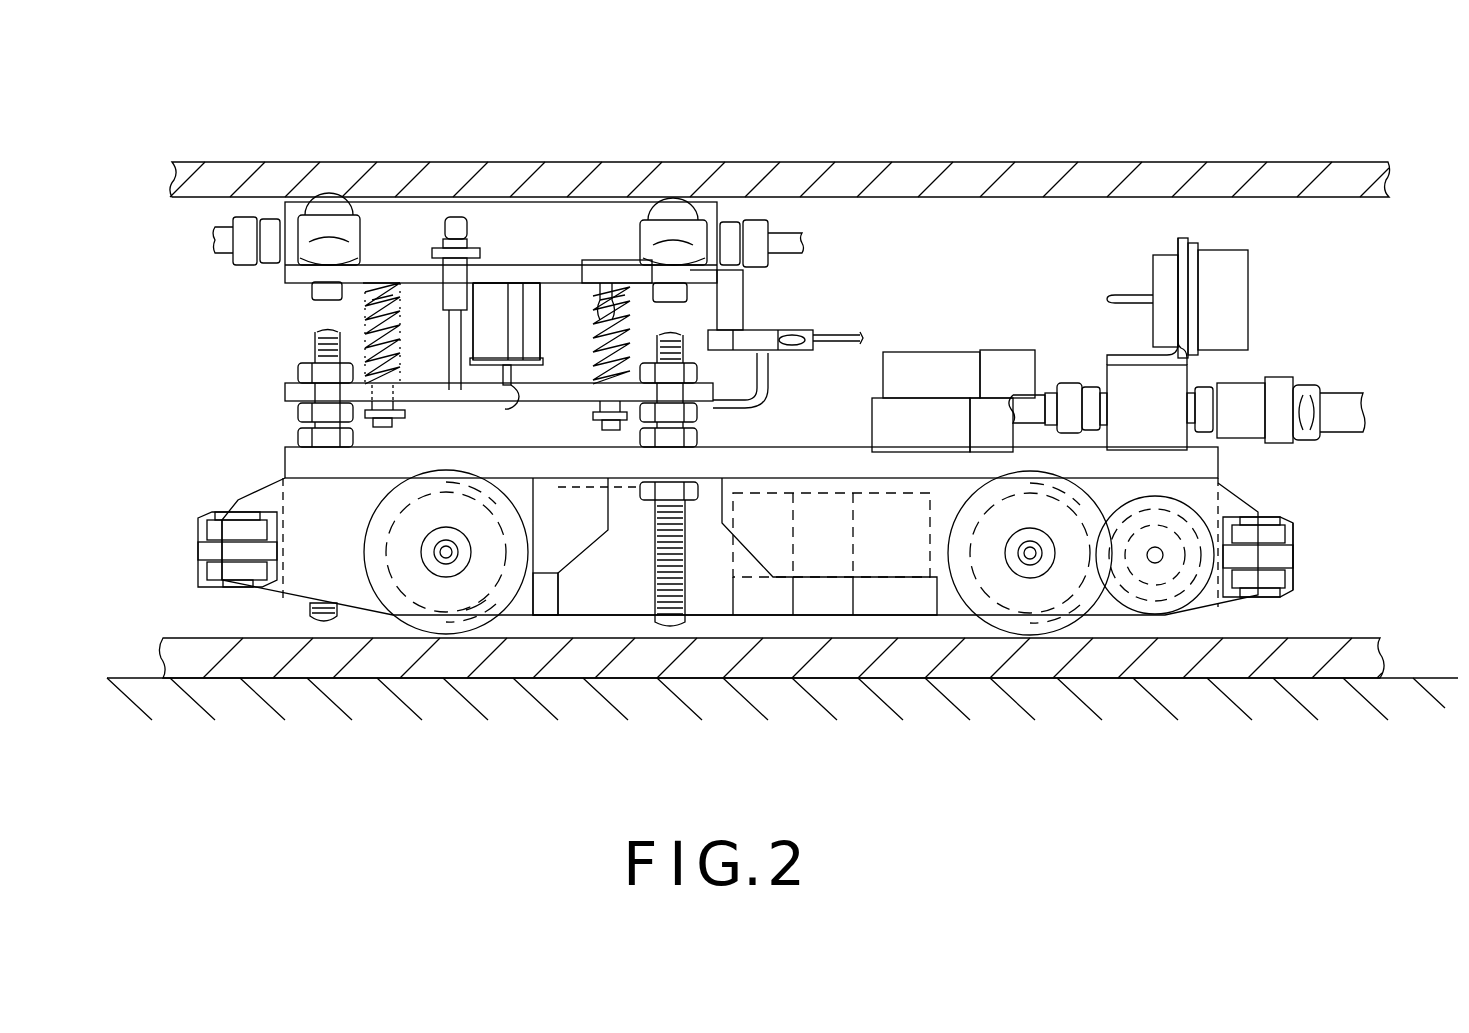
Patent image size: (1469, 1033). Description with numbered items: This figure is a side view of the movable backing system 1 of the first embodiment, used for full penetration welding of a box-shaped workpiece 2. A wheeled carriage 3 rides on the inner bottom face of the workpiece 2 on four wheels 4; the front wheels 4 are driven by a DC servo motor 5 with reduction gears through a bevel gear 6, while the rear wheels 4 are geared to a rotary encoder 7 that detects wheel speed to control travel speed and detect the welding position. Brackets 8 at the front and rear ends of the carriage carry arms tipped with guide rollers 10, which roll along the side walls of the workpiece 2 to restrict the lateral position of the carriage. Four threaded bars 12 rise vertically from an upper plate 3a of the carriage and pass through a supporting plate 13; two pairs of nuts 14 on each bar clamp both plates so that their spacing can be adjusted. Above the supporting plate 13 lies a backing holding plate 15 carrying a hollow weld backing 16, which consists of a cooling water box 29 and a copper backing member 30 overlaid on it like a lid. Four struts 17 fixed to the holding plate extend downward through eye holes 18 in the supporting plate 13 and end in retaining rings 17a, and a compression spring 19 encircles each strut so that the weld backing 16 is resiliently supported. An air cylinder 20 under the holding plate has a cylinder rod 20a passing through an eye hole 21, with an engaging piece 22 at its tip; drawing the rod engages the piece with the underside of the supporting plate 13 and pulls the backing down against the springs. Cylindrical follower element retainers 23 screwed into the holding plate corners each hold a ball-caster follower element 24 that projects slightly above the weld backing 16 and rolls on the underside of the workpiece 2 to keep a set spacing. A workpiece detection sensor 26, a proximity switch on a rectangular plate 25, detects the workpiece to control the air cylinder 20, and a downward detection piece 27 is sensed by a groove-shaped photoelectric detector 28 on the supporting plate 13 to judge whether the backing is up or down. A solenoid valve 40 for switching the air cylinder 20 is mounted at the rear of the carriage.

The movable backing system 1 is at (1380, 325).
The workpiece 2 is at (1364, 203).
The wheeled carriage 3 is at (240, 495).
The upper plate 3a is at (1210, 463).
The wheels 4 is at (398, 604).
The DC servo motor 5 is at (758, 615).
The bevel gear 6 is at (483, 615).
The rotary encoder 7 is at (1195, 612).
The brackets 8 is at (260, 594).
The guide roller 10 is at (213, 542).
The threaded bars 12 is at (317, 623).
The supporting plate 13 is at (290, 392).
The nuts 14 is at (296, 370).
The backing holding plate 15 is at (243, 266).
The weld backing 16 is at (613, 193).
The struts 17 is at (372, 306).
The retaining ring 17a is at (394, 420).
The eye hole 18 is at (408, 367).
The compression springs 19 is at (451, 216).
The air cylinder 20 is at (529, 282).
The cylinder rod 20a is at (540, 283).
The eye hole 21 is at (523, 395).
The engaging piece 22 is at (572, 566).
The follower element retainers 23 is at (322, 225).
The follower element 24 is at (324, 215).
The rectangular plate 25 is at (508, 283).
The workpiece detection sensor 26 is at (473, 285).
The detection piece 27 is at (733, 283).
The photoelectric detector 28 is at (766, 330).
The cooling water box 29 is at (389, 285).
The backing member 30 is at (373, 230).
The solenoid valve 40 is at (945, 363).